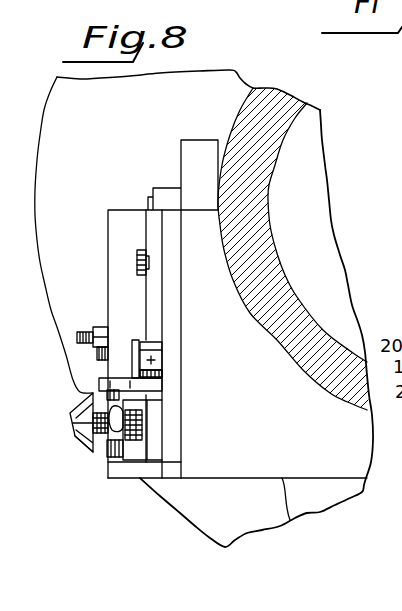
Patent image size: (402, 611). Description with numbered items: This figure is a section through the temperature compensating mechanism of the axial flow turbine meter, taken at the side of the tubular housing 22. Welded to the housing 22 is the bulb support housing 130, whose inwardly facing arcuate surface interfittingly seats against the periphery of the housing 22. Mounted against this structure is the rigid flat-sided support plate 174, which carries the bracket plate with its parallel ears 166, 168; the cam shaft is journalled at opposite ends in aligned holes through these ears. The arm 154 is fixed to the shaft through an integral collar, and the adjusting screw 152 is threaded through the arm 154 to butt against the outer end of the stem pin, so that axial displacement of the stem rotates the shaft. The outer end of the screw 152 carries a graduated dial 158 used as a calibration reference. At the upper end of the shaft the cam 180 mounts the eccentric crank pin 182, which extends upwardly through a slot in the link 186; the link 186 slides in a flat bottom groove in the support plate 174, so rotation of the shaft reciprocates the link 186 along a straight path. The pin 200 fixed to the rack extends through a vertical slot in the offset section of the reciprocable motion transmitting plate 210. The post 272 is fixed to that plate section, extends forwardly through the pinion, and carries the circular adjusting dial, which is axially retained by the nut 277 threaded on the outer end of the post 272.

The housing 22 is at (353, 410).
The bulb support housing 130 is at (290, 520).
The adjusting screw 152 is at (103, 440).
The arm 154 is at (93, 420).
The dial 158 is at (80, 440).
The ear 166 is at (118, 463).
The ear 168 is at (101, 394).
The support plate 174 is at (175, 480).
The cam 180 is at (147, 388).
The crank pin 182 is at (132, 343).
The link 186 is at (147, 343).
The pin 200 is at (387, 320).
The motion transmitting plate 210 is at (118, 208).
The post 272 is at (77, 338).
The nut 277 is at (97, 332).